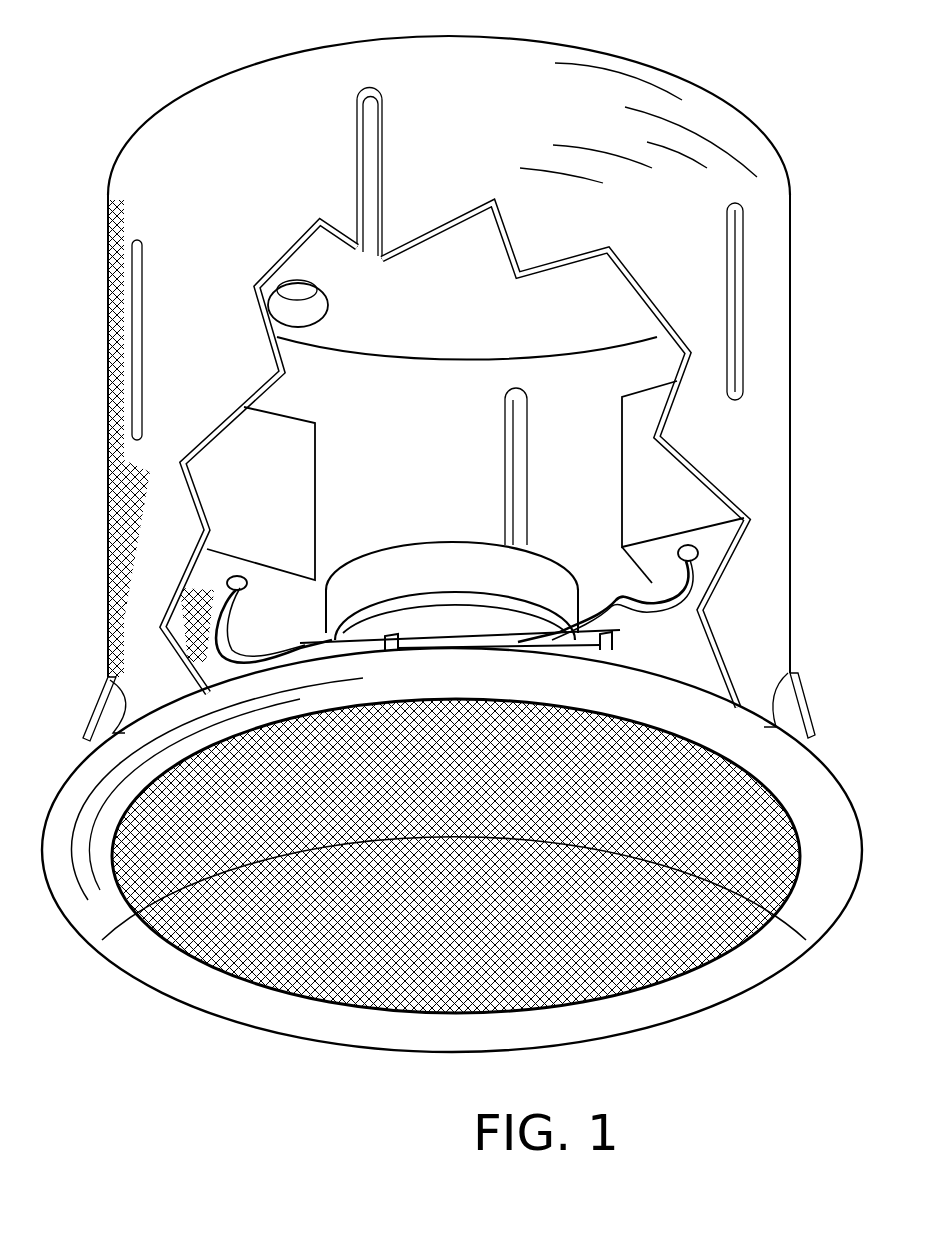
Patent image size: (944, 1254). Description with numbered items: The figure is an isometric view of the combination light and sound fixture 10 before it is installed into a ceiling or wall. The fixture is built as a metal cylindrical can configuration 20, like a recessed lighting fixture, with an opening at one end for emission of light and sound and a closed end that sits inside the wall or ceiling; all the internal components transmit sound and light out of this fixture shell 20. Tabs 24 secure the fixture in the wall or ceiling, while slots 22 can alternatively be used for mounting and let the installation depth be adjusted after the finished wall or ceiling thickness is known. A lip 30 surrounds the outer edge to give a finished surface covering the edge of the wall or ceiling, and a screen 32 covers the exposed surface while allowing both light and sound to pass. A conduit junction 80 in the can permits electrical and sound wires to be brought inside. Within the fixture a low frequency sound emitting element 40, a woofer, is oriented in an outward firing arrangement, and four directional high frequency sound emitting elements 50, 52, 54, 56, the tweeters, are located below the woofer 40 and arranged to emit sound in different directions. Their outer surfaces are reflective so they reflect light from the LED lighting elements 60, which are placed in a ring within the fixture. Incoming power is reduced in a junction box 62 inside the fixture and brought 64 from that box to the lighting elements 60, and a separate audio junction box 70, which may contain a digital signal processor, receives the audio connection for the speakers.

The combination light and sound fixture 10 is at (768, 94).
The cylindrical can configuration 20 is at (792, 268).
The slots 22 is at (743, 328).
The tabs 24 is at (808, 708).
The lip 30 is at (785, 953).
The screen 32 is at (693, 960).
The low frequency sound emitting element 40 is at (373, 558).
The high frequency sound emitting element 50 is at (288, 965).
The high frequency sound emitting element 52 is at (633, 957).
The high frequency sound emitting element 54 is at (242, 775).
The high frequency sound emitting element 56 is at (645, 773).
The lighting elements 60 is at (530, 968).
The junction box 62 is at (686, 497).
The power connection 64 is at (655, 582).
The audio junction box 70 is at (233, 456).
The conduit junction 80 is at (283, 286).